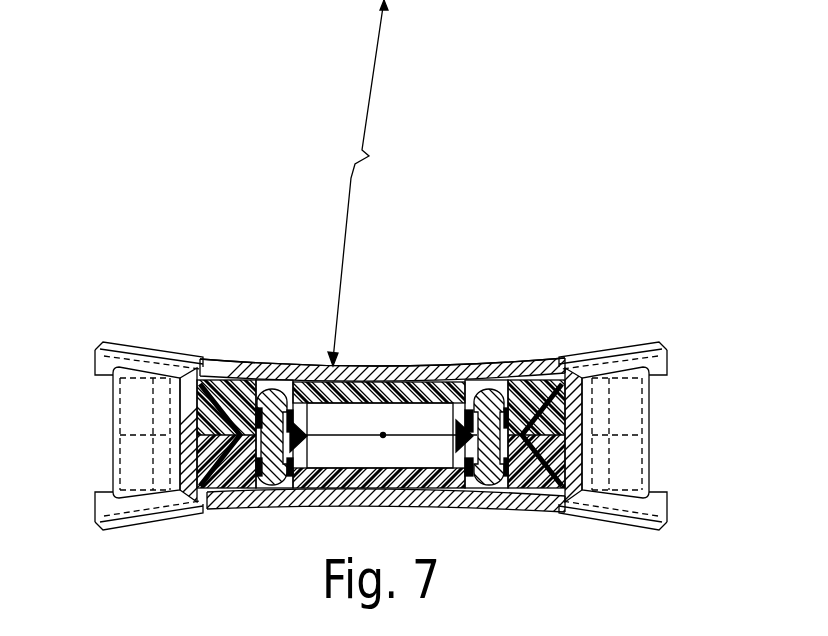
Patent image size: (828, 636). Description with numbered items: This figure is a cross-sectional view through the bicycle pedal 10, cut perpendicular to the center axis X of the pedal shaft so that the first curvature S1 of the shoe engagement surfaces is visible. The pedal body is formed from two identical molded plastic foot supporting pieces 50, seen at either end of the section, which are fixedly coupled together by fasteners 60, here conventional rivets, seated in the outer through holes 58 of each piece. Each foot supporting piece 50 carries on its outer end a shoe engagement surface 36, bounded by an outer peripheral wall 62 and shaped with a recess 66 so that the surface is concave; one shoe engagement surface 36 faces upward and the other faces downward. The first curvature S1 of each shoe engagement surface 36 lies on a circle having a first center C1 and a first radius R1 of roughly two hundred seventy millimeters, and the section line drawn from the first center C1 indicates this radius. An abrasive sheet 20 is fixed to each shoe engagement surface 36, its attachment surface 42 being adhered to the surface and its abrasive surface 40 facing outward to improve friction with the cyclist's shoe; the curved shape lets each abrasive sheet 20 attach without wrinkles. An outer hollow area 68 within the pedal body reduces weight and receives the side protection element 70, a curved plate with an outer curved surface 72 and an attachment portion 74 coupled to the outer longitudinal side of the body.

The bicycle pedal 10 is at (591, 265).
The abrasive sheet 20 is at (383, 435).
The shoe engagement surface 36 is at (506, 355).
The abrasive surface 40 is at (280, 378).
The attachment surface 42 is at (258, 378).
The foot supporting piece 50 is at (585, 366).
The outer through hole 58 is at (289, 372).
The fastener 60 is at (276, 487).
The outer peripheral wall 62 is at (560, 372).
The recess 66 is at (219, 368).
The outer hollow area 68 is at (347, 415).
The side protection element 70 is at (594, 423).
The outer curved surface 72 is at (585, 458).
The attachment portion 74 is at (585, 488).
The first center C1 is at (399, 15).
The first radius R1 is at (366, 183).
The first curvature S1 is at (236, 370).
The center axis X is at (400, 415).